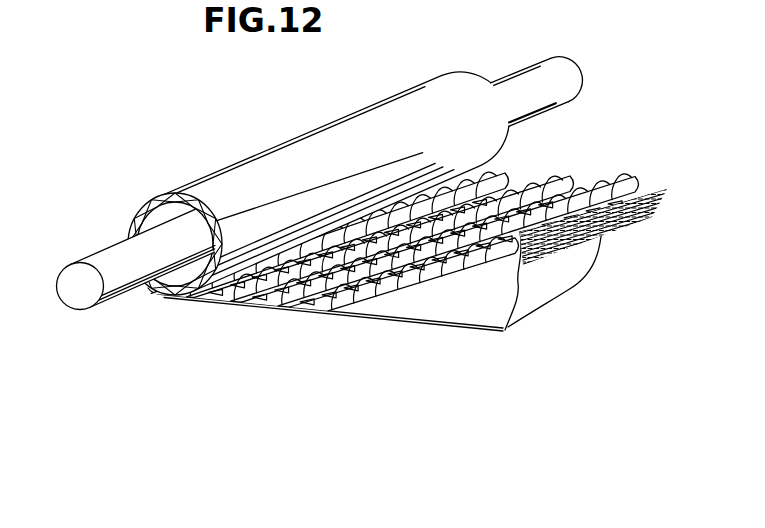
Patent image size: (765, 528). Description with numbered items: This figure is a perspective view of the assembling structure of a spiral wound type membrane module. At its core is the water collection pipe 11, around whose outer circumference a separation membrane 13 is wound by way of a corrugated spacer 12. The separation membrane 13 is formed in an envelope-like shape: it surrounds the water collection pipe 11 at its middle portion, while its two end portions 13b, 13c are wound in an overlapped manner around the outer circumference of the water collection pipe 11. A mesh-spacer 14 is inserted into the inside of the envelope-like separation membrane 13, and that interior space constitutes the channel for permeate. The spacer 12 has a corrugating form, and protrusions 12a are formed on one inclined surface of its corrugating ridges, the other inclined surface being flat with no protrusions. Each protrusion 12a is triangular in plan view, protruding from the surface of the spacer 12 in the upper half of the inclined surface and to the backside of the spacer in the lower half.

The water collection pipe 11 is at (118, 297).
The corrugated spacer 12 is at (249, 305).
The protrusions 12a is at (217, 303).
The separation membrane 13 is at (376, 323).
The end portion 13b is at (450, 310).
The end portion 13c is at (542, 297).
The mesh-spacer 14 is at (638, 190).